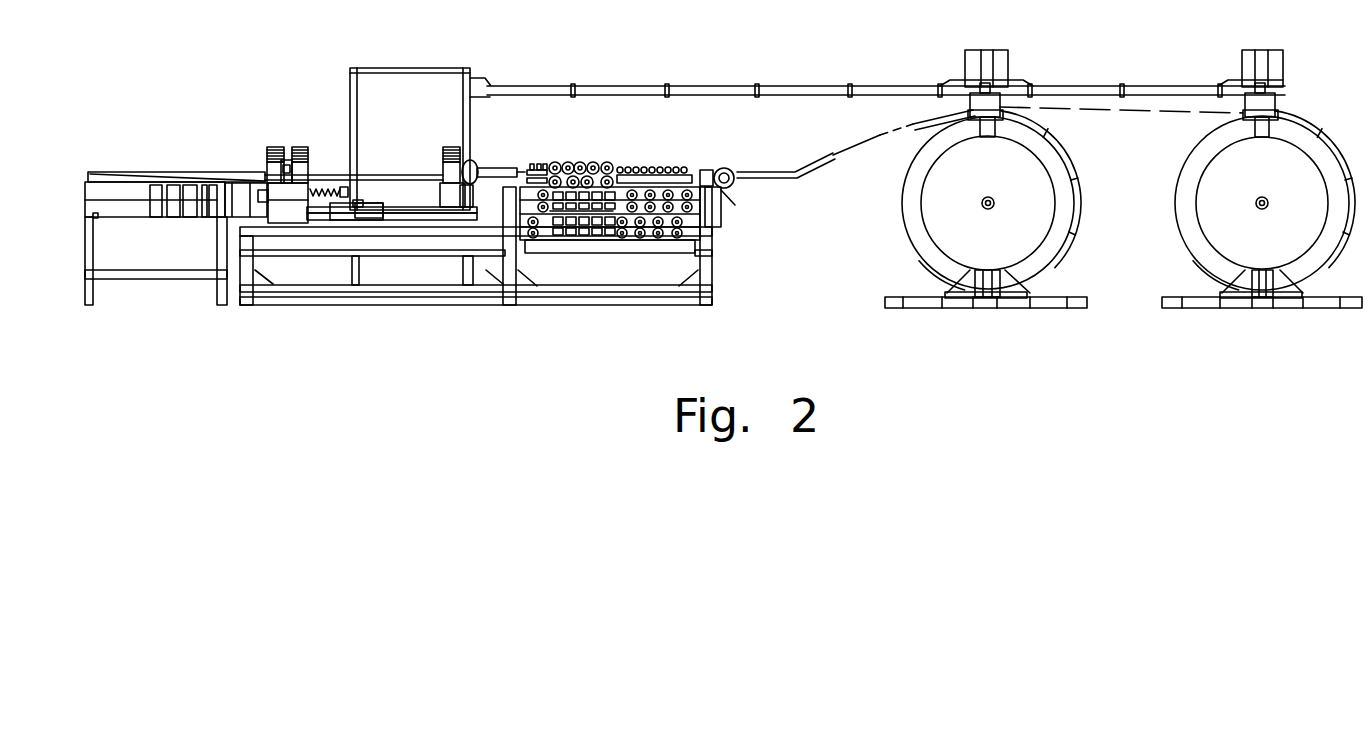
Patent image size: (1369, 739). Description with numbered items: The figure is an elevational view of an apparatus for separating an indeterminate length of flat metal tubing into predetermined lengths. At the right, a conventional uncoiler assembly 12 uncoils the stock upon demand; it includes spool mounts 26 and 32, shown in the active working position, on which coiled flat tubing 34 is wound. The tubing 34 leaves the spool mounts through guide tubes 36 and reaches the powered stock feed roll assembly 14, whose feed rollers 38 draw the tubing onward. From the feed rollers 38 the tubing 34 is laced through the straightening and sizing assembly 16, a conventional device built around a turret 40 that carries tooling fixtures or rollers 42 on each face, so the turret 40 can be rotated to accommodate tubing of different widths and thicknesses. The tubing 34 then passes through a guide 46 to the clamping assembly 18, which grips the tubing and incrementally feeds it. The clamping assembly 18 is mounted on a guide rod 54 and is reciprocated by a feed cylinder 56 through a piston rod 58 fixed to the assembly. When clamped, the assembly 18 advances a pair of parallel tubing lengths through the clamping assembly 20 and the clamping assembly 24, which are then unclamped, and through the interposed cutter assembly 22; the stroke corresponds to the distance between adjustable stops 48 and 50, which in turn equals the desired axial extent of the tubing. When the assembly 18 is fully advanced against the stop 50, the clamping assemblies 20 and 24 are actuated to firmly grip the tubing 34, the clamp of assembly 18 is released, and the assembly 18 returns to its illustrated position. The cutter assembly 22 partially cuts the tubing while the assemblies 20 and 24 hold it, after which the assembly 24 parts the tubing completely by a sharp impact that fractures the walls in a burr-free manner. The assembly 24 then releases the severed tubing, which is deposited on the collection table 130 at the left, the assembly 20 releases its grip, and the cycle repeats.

The uncoiler assembly 12 is at (1079, 254).
The stock feed roll assembly 14 is at (721, 147).
The straightening and sizing assembly 16 is at (578, 140).
The clamping assembly 18 is at (447, 130).
The clamping assembly 20 is at (303, 130).
The cutter assembly 22 is at (284, 147).
The clamping assembly 24 is at (259, 131).
The spool mount 26 is at (937, 168).
The spool mount 32 is at (1207, 185).
The coiled flat tubing 34 is at (1213, 115).
The guide tubes 36 is at (800, 163).
The feed rollers 38 is at (717, 165).
The turret 40 is at (577, 262).
The tooling fixtures or rollers 42 is at (543, 165).
The guide 46 is at (502, 165).
The adjustable stop 48 is at (462, 196).
The adjustable stop 50 is at (336, 190).
The guide rod 54 is at (328, 207).
The feed cylinder 56 is at (192, 220).
The piston rod 58 is at (393, 213).
The collection table 130 is at (153, 177).